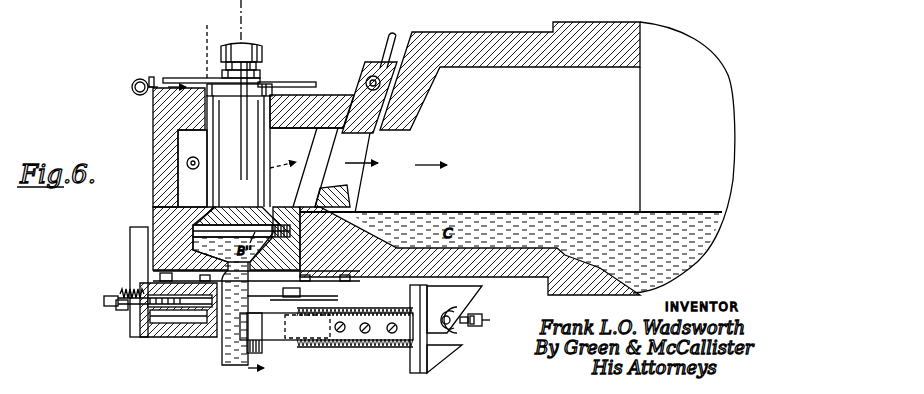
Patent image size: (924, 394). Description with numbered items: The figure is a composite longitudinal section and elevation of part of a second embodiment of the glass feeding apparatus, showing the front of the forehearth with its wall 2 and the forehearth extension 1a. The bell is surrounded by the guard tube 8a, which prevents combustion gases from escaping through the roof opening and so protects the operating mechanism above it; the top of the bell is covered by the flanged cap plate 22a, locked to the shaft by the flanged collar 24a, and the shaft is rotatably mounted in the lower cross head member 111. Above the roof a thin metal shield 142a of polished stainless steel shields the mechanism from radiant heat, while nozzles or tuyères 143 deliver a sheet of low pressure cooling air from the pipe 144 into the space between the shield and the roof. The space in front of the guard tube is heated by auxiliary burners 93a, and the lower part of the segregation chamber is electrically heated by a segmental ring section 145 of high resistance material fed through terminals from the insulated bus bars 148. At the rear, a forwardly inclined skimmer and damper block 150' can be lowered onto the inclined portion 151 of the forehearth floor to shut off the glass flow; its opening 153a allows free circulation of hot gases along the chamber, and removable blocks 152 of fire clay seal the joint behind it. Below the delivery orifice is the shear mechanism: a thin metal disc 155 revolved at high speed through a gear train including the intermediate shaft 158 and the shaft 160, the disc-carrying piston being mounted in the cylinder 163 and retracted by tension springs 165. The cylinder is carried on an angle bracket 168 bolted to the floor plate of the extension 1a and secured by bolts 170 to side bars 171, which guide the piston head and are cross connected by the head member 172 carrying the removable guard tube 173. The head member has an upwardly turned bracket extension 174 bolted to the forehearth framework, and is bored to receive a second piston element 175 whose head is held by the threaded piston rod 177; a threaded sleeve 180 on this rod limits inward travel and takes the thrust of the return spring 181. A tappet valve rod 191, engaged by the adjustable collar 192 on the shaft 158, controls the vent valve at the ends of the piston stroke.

The forehearth wall 2 is at (702, 129).
The forehearth extension 1a is at (531, 275).
The auxiliary burners 93a is at (187, 162).
The segmental ring section 145 is at (177, 230).
The insulated bus bars 148 is at (347, 247).
The guard tube 8a is at (248, 178).
The lower cross head member 111 is at (250, 55).
The flanged collar 24a is at (258, 72).
The flanged cap plate 22a is at (284, 84).
The thin metal shield 142a is at (196, 83).
The nozzles or tuyères 143 is at (151, 79).
The pipe 144 is at (132, 86).
The skimmer and damper block 150' is at (363, 88).
The removable blocks 152 is at (390, 46).
The opening 153a is at (362, 149).
The inclined portion of forehearth floor 151 is at (345, 233).
The bracket extension 174 is at (130, 252).
The head member 172 is at (189, 333).
The second piston element 175 is at (170, 328).
The threaded piston rod 177 is at (104, 301).
The return spring 181 is at (130, 290).
The threaded sleeve 180 is at (122, 308).
The removable guard tube 173 is at (218, 355).
The side bars 171 is at (284, 334).
The thin metal disc 155 is at (322, 300).
The cylinder 163 is at (348, 309).
The tension springs 165 is at (389, 340).
The bolts 170 is at (362, 333).
The angle bracket 168 is at (446, 329).
The tappet valve rod 191 is at (450, 338).
The shaft 160 is at (458, 328).
The intermediate shaft 158 is at (484, 320).
The adjustable collar 192 is at (495, 307).